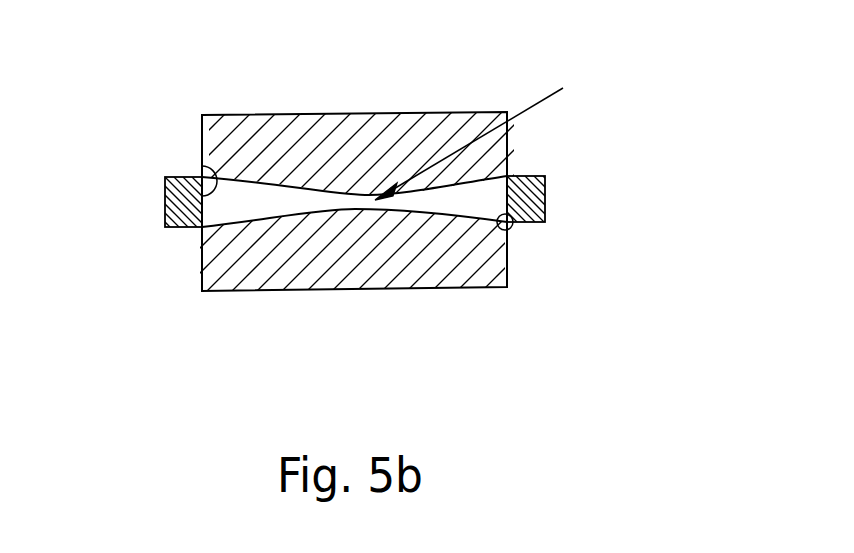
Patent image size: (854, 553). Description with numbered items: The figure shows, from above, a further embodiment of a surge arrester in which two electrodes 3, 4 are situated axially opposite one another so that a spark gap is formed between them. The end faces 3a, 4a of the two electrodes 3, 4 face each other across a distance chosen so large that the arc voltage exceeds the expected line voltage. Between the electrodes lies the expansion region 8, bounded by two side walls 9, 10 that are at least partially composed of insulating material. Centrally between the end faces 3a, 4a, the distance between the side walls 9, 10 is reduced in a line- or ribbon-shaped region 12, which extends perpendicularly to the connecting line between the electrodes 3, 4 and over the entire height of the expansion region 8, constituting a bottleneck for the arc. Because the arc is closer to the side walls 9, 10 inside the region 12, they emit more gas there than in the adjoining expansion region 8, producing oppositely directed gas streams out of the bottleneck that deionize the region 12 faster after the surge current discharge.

The electrode 3 is at (545, 195).
The end face of electrode 3a is at (510, 230).
The electrode 4 is at (165, 227).
The end face of electrode 4a is at (210, 166).
The expansion region 8 is at (250, 208).
The side wall of expansion region 9 is at (290, 212).
The side wall of expansion region 10 is at (273, 182).
The region of reduced side wall distance 12 is at (487, 131).